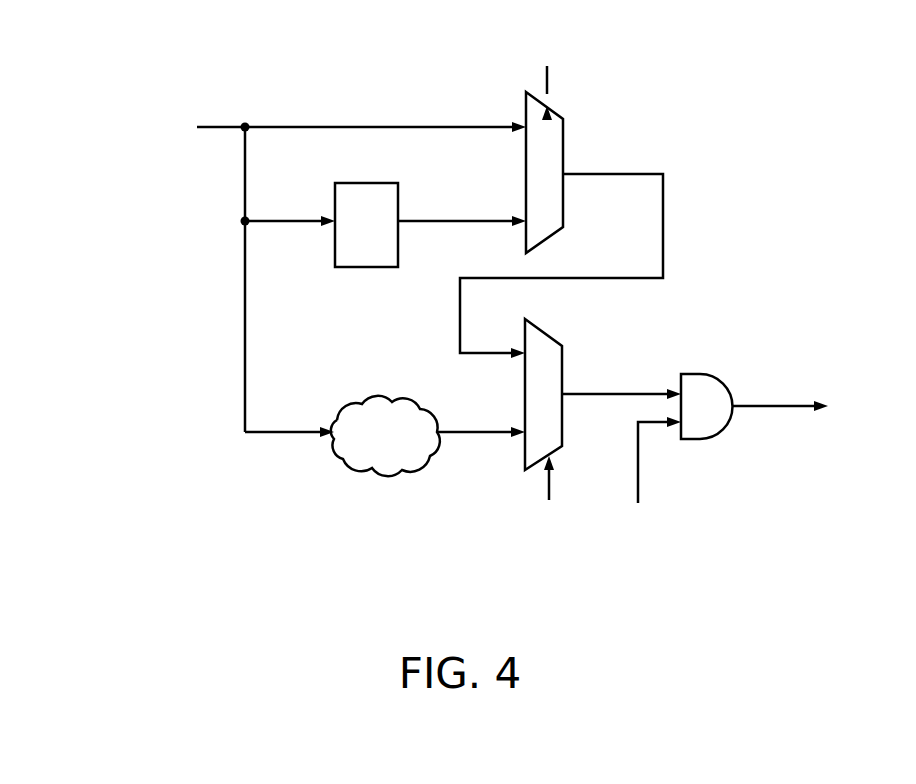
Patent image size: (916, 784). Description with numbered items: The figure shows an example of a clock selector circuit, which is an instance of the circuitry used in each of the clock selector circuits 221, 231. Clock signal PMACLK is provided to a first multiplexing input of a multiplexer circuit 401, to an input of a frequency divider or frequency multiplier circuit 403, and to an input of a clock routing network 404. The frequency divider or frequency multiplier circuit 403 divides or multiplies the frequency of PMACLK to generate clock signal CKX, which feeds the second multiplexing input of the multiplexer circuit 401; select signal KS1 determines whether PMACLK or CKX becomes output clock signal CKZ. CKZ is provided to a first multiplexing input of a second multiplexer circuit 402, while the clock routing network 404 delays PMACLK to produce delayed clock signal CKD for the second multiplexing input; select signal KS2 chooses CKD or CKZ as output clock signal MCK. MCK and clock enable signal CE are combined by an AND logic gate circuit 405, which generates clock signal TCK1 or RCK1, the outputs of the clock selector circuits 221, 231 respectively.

The clock selector circuit 221 is at (500, 286).
The clock selector circuit 231 is at (270, 78).
The multiplexer circuit 401 is at (552, 237).
The multiplexer circuit 402 is at (545, 333).
The frequency divider or frequency multiplier circuit 403 is at (367, 267).
The clock routing network 404 is at (386, 472).
The AND logic gate circuit 405 is at (707, 374).